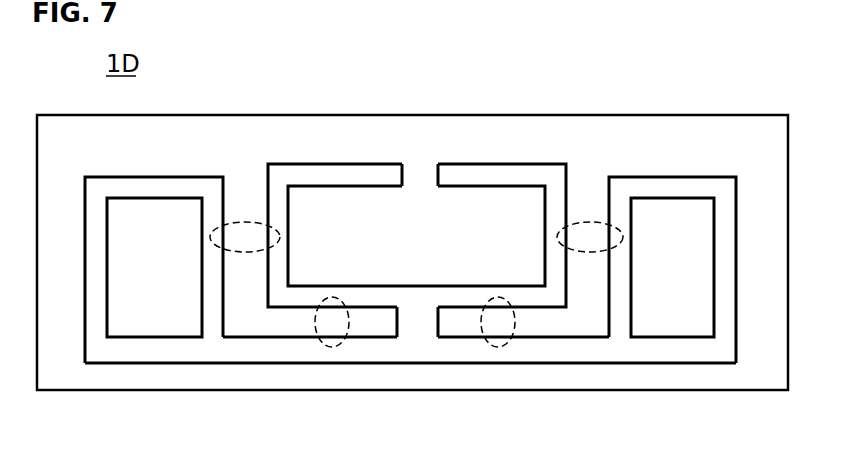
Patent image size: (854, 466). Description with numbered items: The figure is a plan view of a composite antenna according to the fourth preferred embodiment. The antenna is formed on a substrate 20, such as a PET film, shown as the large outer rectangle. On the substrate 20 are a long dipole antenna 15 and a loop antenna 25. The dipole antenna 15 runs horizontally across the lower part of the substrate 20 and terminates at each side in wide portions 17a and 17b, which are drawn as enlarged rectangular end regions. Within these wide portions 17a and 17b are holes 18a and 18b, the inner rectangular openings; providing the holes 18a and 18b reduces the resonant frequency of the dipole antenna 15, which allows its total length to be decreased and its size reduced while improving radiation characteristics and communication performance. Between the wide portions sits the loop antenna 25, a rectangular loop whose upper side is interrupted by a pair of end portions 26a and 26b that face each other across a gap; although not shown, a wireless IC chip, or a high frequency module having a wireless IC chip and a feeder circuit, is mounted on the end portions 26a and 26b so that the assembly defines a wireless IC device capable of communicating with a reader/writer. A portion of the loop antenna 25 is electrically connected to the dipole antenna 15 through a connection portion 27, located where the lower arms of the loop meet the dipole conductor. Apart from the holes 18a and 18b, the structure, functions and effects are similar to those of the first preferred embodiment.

The dipole antenna 15 is at (543, 352).
The wide portion 17a is at (128, 177).
The wide portion 17b is at (640, 177).
The hole 18a is at (172, 228).
The hole 18b is at (689, 227).
The substrate 20 is at (623, 115).
The loop antenna 25 is at (527, 160).
The end portion 26a is at (390, 175).
The end portion 26b is at (448, 175).
The connection portion 27 is at (422, 325).